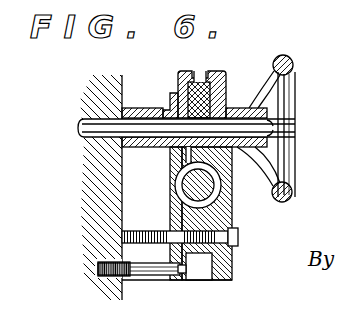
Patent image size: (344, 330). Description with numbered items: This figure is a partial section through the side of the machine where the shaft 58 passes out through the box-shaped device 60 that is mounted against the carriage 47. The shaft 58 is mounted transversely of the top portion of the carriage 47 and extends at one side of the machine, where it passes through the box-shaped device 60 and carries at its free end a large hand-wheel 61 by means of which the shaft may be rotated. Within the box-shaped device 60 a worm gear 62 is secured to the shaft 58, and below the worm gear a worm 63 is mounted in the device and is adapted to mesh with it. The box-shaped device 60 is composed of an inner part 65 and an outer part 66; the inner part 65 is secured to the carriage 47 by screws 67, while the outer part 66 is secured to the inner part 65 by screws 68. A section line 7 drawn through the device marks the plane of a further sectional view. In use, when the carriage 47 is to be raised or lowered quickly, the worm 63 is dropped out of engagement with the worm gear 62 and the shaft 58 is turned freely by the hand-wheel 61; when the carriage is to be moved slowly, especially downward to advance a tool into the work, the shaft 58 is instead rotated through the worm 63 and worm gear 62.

The section line 7- 7 is at (199, 71).
The carriage 47 is at (113, 170).
The shaft 58 is at (78, 128).
The box-shaped device 60 is at (222, 72).
The hand-wheel 61 is at (292, 66).
The worm gear 62 is at (177, 92).
The worm 63 is at (215, 202).
The inner part 65 is at (170, 177).
The outer part 66 is at (232, 185).
The screws 67 is at (138, 262).
The screws 68 is at (238, 236).